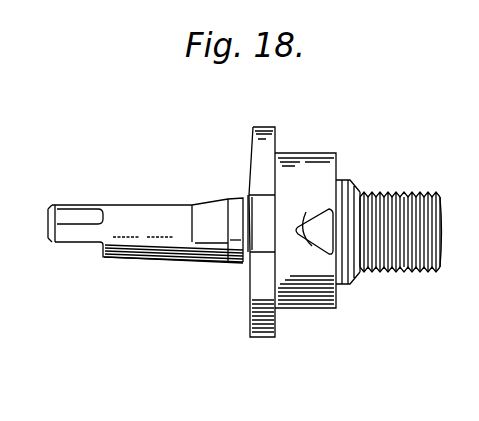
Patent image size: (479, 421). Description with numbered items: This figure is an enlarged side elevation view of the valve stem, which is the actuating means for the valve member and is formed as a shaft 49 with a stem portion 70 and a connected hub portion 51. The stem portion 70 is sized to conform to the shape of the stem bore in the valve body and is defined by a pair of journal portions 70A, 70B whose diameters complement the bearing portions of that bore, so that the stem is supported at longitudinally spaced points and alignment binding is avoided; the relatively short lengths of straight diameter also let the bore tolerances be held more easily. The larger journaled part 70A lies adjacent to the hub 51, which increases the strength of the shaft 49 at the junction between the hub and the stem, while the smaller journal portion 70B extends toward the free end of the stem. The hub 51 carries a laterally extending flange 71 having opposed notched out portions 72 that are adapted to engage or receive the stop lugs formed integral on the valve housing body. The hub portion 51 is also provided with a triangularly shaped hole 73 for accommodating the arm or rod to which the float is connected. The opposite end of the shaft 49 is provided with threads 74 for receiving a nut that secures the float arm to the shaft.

The shaft 49 is at (335, 142).
The hub portion 51 is at (328, 170).
The stem portion 70 is at (156, 262).
The journal portion 70A is at (229, 264).
The journal portion 70B is at (117, 262).
The flange 71 is at (278, 143).
The notched out portions 72 is at (259, 250).
The triangularly shaped hole 73 is at (311, 240).
The threaded portion 74 is at (405, 190).